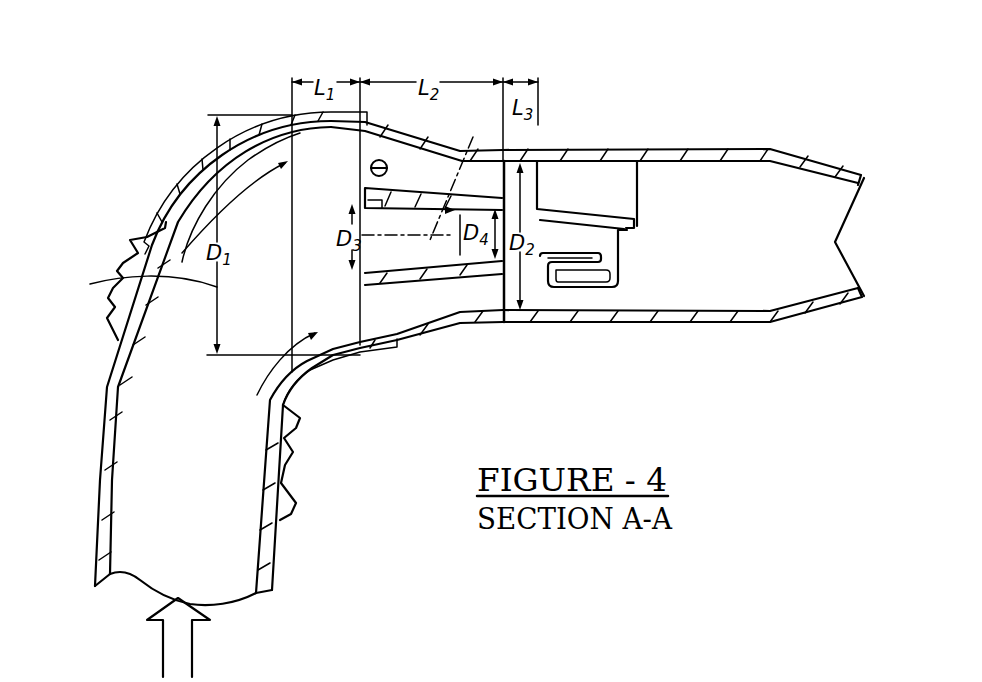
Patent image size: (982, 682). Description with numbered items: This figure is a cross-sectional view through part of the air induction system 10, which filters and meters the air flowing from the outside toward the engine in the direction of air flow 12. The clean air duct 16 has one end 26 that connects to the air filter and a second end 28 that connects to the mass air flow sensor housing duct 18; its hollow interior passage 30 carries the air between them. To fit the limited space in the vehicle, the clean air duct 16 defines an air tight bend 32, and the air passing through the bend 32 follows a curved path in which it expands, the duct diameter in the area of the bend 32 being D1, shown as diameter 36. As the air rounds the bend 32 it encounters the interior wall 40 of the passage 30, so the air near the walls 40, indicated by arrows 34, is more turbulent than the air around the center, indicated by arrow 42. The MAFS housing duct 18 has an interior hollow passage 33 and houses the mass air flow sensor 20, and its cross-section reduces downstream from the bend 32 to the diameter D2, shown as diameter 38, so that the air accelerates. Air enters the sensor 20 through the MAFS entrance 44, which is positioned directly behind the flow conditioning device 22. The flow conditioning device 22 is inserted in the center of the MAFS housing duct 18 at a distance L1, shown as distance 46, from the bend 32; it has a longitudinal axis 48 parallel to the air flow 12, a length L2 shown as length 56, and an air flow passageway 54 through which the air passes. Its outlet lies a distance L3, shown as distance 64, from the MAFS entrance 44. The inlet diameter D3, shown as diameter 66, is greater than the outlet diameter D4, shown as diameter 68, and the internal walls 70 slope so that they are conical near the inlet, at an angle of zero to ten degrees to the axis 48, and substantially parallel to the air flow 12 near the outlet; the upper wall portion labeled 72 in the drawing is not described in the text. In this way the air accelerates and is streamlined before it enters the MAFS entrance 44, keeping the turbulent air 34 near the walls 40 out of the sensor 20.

The air induction system 10 is at (168, 150).
The direction of air flow 12 is at (160, 657).
The clean air duct 16 is at (123, 541).
The mass air flow sensor housing duct 18 is at (703, 177).
The mass air flow sensor 20 is at (613, 180).
The flow conditioning device 22 is at (490, 285).
The one end of clean air duct 26 is at (241, 597).
The second end of clean air duct 28 is at (290, 460).
The hollow interior passage 30 is at (202, 551).
The bend 32 is at (204, 154).
The interior hollow passage 33 is at (745, 250).
The air near the walls 34 is at (192, 232).
The diameter D1 36 is at (118, 281).
The diameter D2 38 is at (530, 187).
The interior wall 40 is at (256, 145).
The air around the center 42 is at (213, 327).
The MAFS entrance 44 is at (572, 252).
The distance L1 46 is at (338, 82).
The longitudinal axis 48 is at (457, 177).
The air flow passageway 54 is at (411, 265).
The length L2 56 is at (458, 82).
The distance L3 64 is at (521, 82).
The diameter D3 66 is at (378, 256).
The diameter D4 68 is at (465, 318).
The internal wall 70 is at (438, 262).
The nozzle upper wall 72 is at (402, 195).